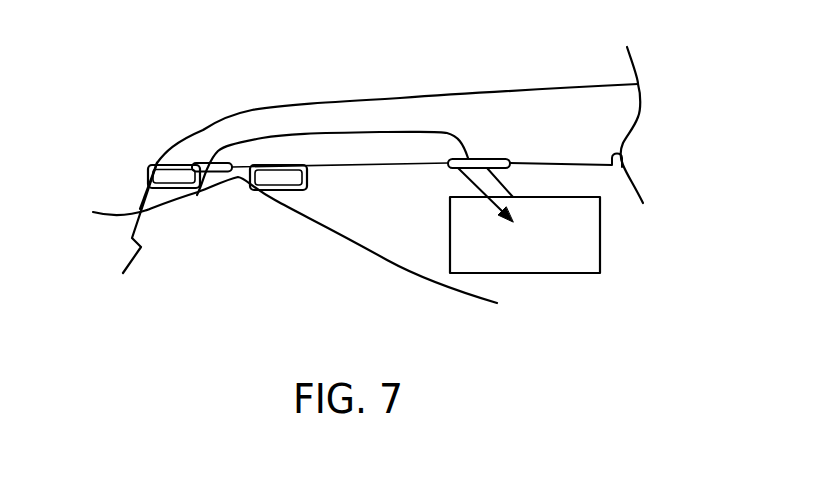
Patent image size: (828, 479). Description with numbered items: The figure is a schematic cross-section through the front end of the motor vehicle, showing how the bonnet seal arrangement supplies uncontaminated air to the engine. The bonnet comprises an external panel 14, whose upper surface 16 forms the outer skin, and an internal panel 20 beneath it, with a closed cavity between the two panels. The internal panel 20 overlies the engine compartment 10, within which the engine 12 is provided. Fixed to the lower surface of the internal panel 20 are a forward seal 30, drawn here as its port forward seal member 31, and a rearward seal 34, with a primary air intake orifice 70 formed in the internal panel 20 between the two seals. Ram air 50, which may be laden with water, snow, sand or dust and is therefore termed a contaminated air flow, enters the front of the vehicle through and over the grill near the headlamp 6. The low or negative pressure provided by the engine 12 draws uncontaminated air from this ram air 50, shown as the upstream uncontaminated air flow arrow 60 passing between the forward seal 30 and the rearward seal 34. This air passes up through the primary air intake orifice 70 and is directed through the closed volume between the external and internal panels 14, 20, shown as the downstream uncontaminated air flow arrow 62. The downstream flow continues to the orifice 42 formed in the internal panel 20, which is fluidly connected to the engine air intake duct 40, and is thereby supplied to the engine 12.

The headlamp 6 is at (132, 238).
The engine compartment 10 is at (548, 275).
The engine 12 is at (543, 275).
The external panel 14 is at (397, 86).
The upper surface 16 is at (470, 93).
The internal panel 20 is at (630, 160).
The forward seal 30 is at (136, 162).
The port forward seal member 31 is at (173, 150).
The rearward seal 34 is at (265, 165).
The engine air intake duct 40 is at (465, 182).
The orifice 42 is at (450, 168).
The ram air 50 is at (166, 208).
The upstream uncontaminated air flow arrow 60 is at (201, 193).
The downstream uncontaminated air flow arrow 62 is at (332, 132).
The primary air intake orifice 70 is at (220, 163).